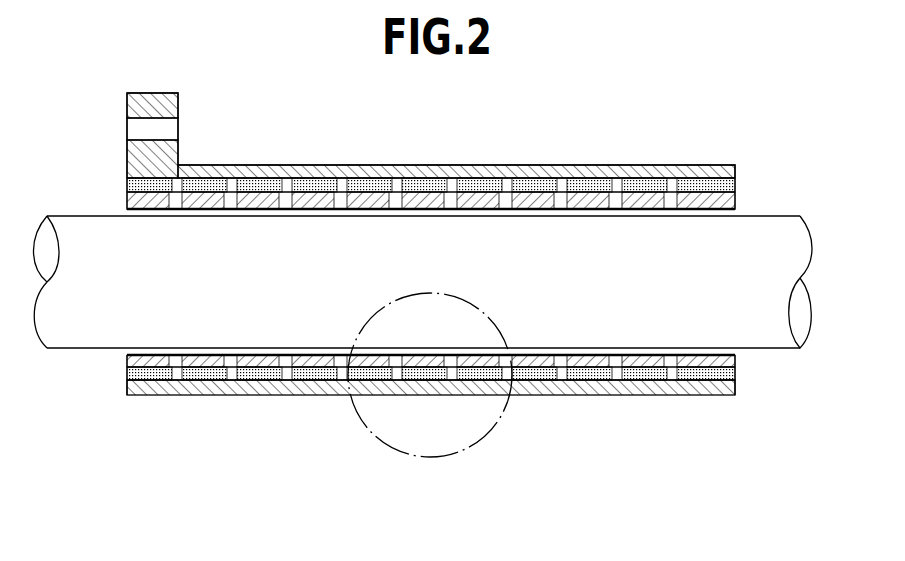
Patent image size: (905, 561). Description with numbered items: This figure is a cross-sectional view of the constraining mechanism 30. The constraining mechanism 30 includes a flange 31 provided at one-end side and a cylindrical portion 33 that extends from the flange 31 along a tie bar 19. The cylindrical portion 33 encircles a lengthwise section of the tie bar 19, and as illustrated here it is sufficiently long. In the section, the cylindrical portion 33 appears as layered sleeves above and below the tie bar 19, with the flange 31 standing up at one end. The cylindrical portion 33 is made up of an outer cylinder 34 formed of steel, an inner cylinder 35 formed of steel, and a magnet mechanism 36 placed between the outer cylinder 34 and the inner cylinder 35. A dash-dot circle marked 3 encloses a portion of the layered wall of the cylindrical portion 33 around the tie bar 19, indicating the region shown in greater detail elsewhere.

The enlarged portion (detail circle) 3 is at (372, 437).
The tie bar 19 is at (90, 236).
The constraining mechanism 30 is at (388, 255).
The flange 31 is at (160, 98).
The cylindrical portion 33 is at (424, 166).
The outer cylinder 34 is at (126, 392).
The inner cylinder 35 is at (125, 362).
The magnet mechanism 36 is at (125, 378).